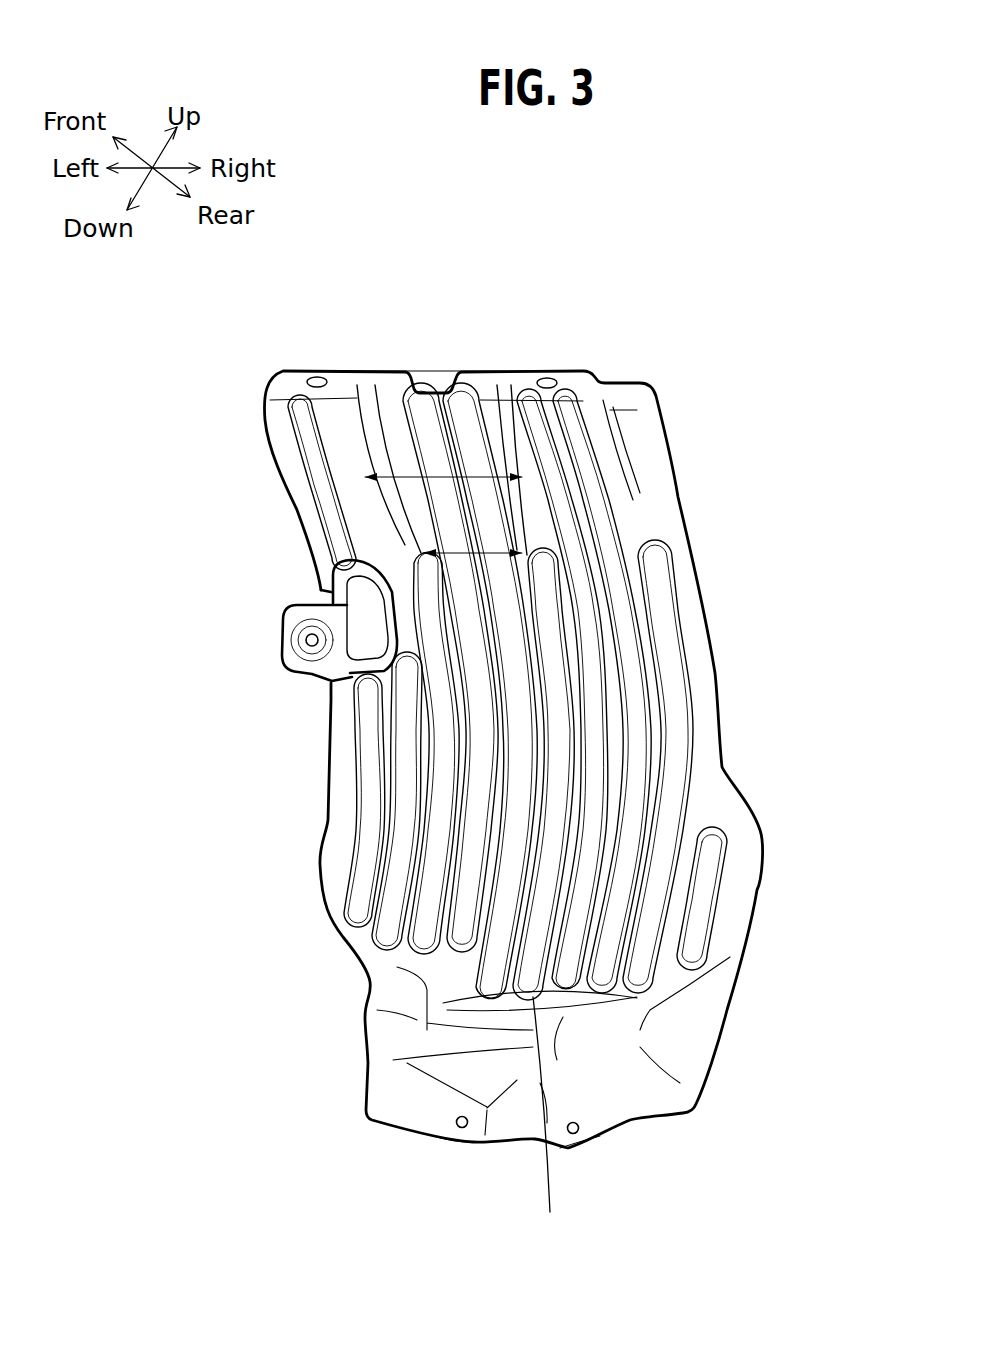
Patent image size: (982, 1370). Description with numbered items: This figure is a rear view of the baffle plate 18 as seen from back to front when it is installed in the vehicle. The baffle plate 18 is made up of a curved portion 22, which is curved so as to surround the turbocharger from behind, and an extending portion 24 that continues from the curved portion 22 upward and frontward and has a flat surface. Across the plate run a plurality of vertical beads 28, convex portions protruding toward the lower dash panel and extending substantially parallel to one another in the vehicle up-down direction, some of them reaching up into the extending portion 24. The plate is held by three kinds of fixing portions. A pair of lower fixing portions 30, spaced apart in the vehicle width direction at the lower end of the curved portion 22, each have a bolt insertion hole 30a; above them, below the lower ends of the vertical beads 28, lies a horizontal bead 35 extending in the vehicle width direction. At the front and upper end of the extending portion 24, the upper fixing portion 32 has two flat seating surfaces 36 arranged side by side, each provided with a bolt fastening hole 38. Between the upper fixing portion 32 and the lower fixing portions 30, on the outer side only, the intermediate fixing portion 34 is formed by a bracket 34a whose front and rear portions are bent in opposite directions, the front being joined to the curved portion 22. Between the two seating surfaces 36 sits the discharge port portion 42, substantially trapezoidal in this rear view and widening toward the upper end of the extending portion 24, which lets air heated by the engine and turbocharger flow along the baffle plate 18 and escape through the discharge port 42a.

The baffle plate 18 is at (740, 621).
The curved portion 22 is at (758, 886).
The extending portion 24 is at (674, 468).
The vertical beads 28 is at (480, 780).
The lower fixing portion 30 is at (581, 1154).
The bolt insertion hole 30a is at (578, 1129).
The upper fixing portion 32 is at (531, 358).
The intermediate fixing portion 34 is at (271, 629).
The bracket 34a is at (292, 657).
The horizontal bead 35 is at (550, 1120).
The seating surface 36 is at (510, 378).
The bolt fastening hole 38 is at (555, 379).
The discharge port portion 42 is at (357, 480).
The discharge port 42a is at (431, 392).